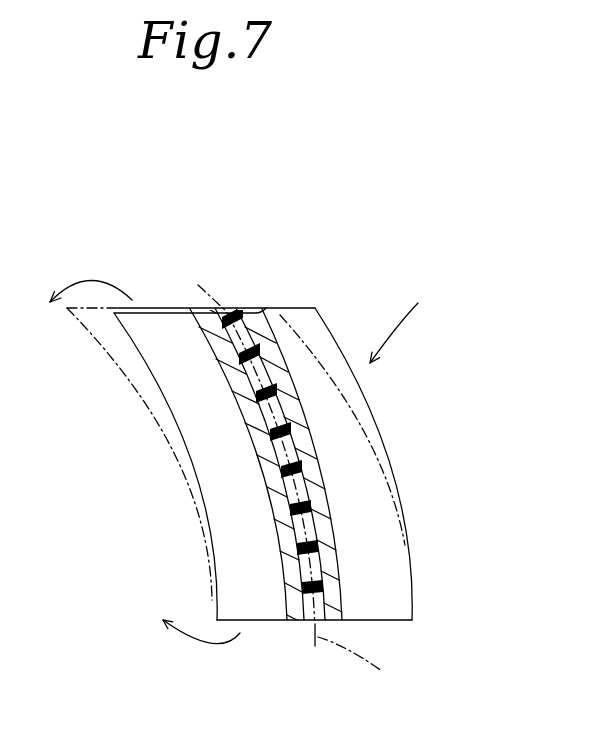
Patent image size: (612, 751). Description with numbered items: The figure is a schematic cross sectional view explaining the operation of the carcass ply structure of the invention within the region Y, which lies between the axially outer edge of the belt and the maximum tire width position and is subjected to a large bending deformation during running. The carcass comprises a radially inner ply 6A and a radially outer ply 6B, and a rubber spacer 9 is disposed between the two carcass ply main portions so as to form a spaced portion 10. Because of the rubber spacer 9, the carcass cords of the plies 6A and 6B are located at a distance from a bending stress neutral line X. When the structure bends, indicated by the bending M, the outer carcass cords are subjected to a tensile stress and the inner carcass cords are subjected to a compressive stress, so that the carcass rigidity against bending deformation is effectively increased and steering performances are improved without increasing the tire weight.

The radially inner ply 6A is at (205, 333).
The radially outer ply 6B is at (254, 333).
The rubber spacer 9 is at (247, 322).
The spaced portion 10 is at (299, 413).
The bending direction M is at (145, 460).
The bending stress neutral line X is at (360, 655).
The region Y is at (406, 323).